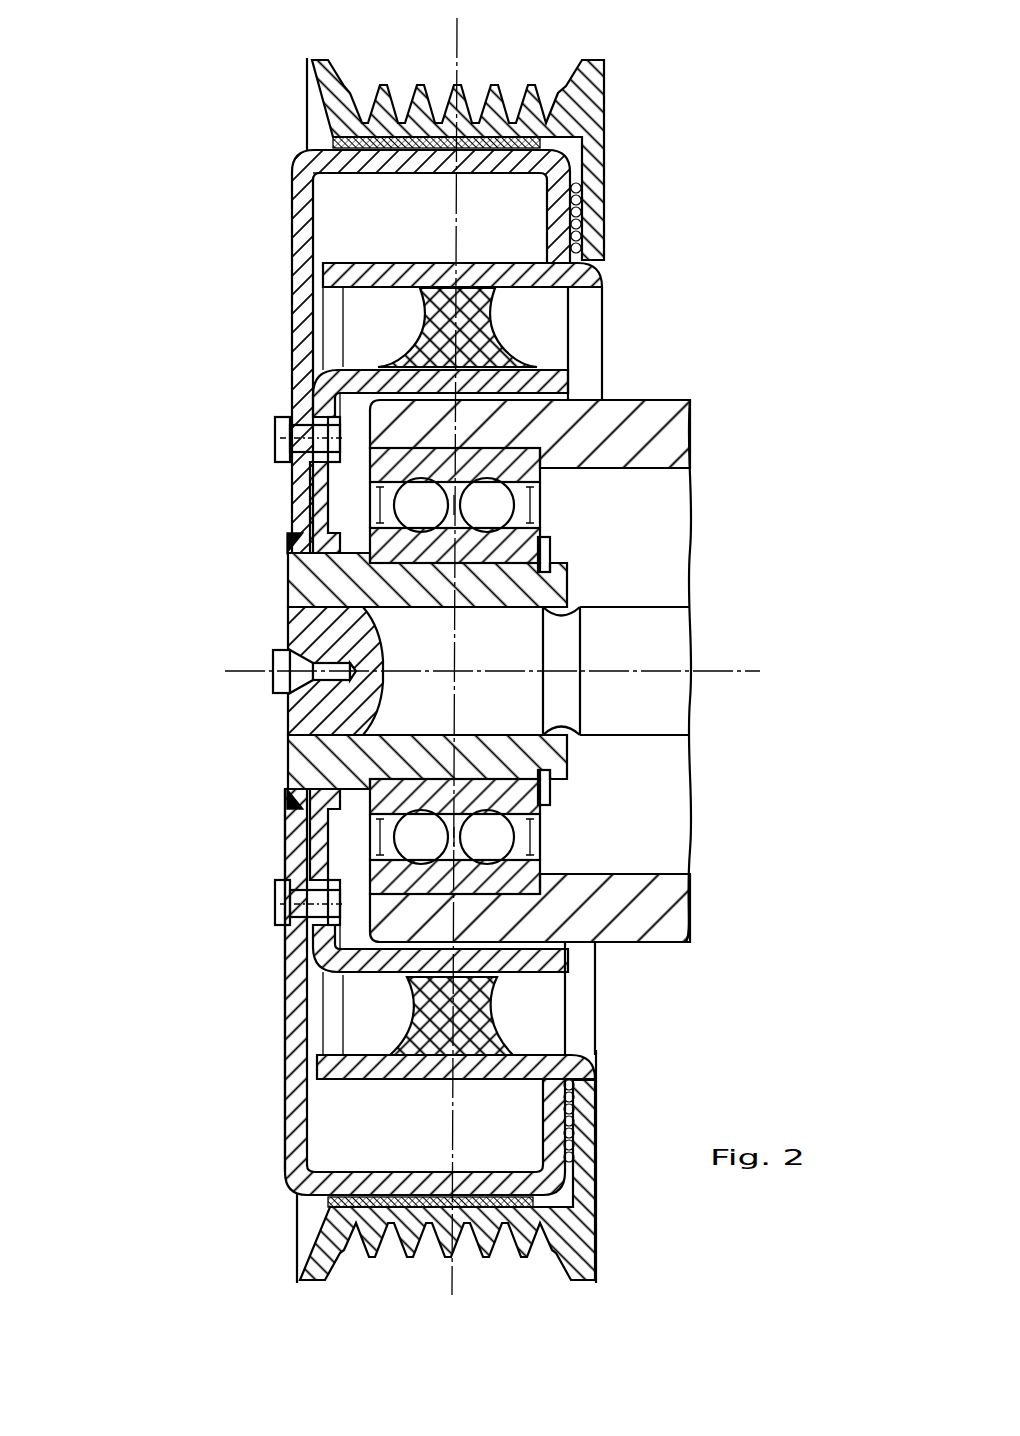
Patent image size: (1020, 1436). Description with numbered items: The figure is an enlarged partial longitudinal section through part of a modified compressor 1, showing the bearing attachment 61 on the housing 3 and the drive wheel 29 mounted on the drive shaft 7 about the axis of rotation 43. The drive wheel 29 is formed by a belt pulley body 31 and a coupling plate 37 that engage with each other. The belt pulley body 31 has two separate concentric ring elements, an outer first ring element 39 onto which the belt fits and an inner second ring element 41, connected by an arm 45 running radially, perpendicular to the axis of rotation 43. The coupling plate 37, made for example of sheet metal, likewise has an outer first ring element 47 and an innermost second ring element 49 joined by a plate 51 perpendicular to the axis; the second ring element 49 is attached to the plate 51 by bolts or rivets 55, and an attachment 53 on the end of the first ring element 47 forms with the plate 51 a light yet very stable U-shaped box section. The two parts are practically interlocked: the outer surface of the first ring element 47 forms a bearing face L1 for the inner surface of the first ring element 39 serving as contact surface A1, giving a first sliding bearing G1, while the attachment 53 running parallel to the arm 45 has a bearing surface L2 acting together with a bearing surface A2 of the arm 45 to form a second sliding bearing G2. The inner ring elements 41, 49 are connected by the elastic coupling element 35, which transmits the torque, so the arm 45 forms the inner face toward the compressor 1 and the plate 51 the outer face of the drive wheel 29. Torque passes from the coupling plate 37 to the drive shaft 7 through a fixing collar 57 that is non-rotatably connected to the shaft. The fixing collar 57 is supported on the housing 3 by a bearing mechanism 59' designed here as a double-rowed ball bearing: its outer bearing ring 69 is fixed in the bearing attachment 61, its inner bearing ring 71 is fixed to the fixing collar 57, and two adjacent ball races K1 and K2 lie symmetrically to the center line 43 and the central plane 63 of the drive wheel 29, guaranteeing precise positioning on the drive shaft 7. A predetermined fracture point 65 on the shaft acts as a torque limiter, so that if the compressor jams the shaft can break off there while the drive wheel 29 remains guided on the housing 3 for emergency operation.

The compressor 1 is at (676, 377).
The housing 3 is at (706, 396).
The drive shaft 7 is at (655, 657).
The drive wheel 29 is at (249, 184).
The belt pulley body 31 is at (300, 79).
The elastic coupling element 35 is at (420, 322).
The coupling plate 37 is at (270, 967).
The first ring element 39 is at (300, 1278).
The second ring element 41 is at (300, 1072).
The axis of rotation 43 is at (700, 670).
The arm 45 is at (592, 1172).
The first ring element 47 is at (330, 1199).
The second ring element 49 is at (563, 965).
The plate 51 is at (300, 1012).
The attachment 53 is at (575, 1105).
The bolts or rivets 55 is at (292, 432).
The fixing collar 57 is at (300, 587).
The retaining sheet 59' is at (339, 461).
The bearing attachment 61 is at (665, 437).
The central plane 63 is at (466, 41).
The predetermined fracture point 65 is at (560, 640).
The outer bearing ring 69 is at (541, 484).
The inner bearing ring 71 is at (352, 560).
The contact surface A1 is at (425, 132).
The bearing surface A2 is at (605, 211).
The bearing face L1 is at (380, 153).
The bearing surface L2 is at (580, 250).
The ball race K1 is at (418, 507).
The ball race K2 is at (490, 505).
The first bearing G1 is at (494, 1188).
The second bearing G2 is at (540, 1135).